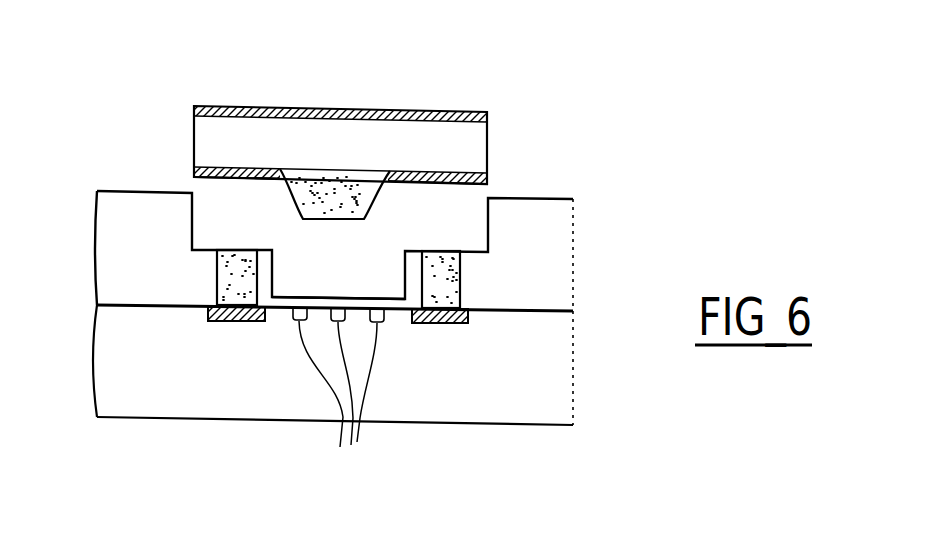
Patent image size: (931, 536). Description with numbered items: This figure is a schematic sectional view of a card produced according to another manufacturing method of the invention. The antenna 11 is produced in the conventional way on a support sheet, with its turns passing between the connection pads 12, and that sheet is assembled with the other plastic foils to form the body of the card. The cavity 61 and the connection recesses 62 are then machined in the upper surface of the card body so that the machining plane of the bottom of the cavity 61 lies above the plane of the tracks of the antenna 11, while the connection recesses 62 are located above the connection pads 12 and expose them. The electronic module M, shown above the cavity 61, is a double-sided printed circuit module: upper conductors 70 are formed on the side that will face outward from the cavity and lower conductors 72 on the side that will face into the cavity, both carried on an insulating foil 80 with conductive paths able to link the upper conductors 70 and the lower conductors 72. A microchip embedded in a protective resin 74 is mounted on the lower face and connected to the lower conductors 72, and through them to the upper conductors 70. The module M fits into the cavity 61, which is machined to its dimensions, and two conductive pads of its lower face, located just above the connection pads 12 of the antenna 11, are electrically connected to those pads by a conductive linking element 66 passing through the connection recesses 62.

The electronic module M is at (525, 83).
The insulating foil 80 is at (477, 143).
The upper conductors 70 is at (231, 106).
The lower conductors 72 is at (487, 173).
The protective resin 74 is at (362, 200).
The connection recesses 62 is at (207, 267).
The conductive linking element 66 is at (233, 262).
The cavity 61 is at (338, 270).
The connection pads 12 is at (223, 323).
The antenna 11 is at (338, 392).